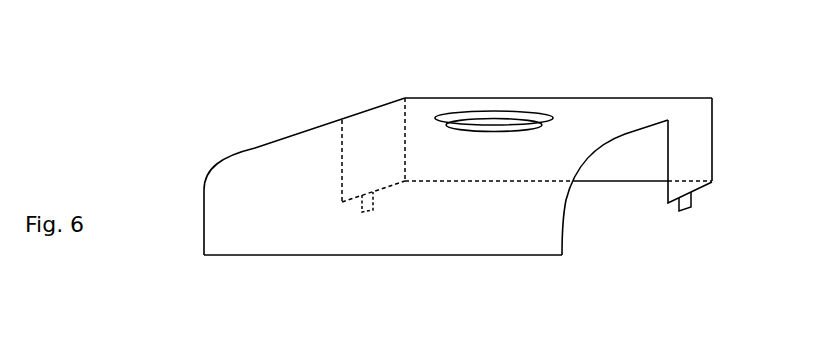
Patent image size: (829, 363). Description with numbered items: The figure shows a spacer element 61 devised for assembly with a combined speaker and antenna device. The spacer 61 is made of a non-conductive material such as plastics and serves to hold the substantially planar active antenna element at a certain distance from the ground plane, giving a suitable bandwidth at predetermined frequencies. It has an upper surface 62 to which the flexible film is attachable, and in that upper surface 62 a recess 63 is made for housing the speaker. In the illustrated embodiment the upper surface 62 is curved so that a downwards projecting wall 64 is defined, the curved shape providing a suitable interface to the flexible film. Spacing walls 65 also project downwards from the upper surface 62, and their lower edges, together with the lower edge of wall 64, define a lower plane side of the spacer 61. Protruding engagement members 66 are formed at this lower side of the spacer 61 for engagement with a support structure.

The spacer element 61 is at (205, 138).
The upper surface 62 is at (592, 112).
The recess 63 is at (498, 123).
The downwards projecting wall 64 is at (295, 242).
The spacing walls 65 is at (697, 150).
The protruding engagement members 66 is at (683, 215).